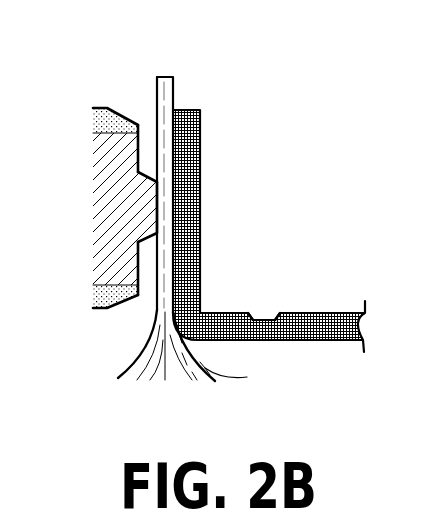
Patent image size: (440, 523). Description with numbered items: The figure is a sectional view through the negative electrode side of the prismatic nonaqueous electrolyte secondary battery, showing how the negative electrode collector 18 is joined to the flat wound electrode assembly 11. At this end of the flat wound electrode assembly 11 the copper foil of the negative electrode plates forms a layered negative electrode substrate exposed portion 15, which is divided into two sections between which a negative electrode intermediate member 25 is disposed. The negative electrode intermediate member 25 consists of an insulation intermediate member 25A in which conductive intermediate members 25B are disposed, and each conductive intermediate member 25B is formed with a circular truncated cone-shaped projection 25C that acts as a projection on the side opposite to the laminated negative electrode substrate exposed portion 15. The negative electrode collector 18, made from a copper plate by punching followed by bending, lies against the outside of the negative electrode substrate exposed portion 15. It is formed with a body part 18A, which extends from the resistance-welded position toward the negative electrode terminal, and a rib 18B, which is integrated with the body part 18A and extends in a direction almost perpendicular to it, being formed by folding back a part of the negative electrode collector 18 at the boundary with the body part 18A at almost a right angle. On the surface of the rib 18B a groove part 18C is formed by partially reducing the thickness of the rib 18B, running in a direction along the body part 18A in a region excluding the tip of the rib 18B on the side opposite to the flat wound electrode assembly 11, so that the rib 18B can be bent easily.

The flat wound electrode assembly 11 is at (237, 370).
The negative electrode substrate exposed portion 15 is at (166, 77).
The negative electrode collector 18 is at (269, 229).
The body part 18A is at (200, 109).
The rib 18B is at (327, 330).
The groove part 18C is at (265, 312).
The negative electrode intermediate member 25 is at (89, 217).
The insulation intermediate member 25A is at (92, 298).
The conductive intermediate member 25B is at (105, 213).
The circular truncated cone-shaped projection 25C is at (157, 210).